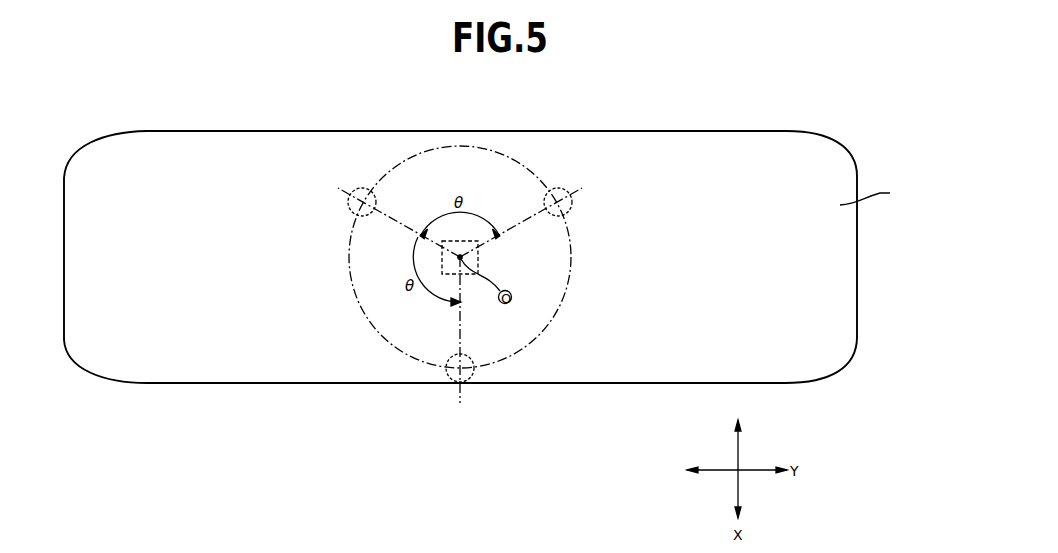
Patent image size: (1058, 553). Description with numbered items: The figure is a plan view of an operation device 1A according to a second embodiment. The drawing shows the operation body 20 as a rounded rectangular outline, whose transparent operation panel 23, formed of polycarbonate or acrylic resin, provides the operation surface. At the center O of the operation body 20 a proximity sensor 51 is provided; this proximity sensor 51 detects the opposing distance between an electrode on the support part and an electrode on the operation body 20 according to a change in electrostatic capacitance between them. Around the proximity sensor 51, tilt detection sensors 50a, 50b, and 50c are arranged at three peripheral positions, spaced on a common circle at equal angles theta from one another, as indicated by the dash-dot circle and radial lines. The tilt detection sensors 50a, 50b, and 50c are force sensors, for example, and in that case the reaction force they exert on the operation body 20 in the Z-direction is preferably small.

The operation device 1A is at (655, 101).
The operation body 20 is at (862, 286).
The operation panel 23 is at (877, 194).
The tilt detection sensor 50a is at (452, 381).
The tilt detection sensor 50b is at (572, 201).
The tilt detection sensor 50c is at (348, 202).
The proximity sensor 51 is at (480, 265).